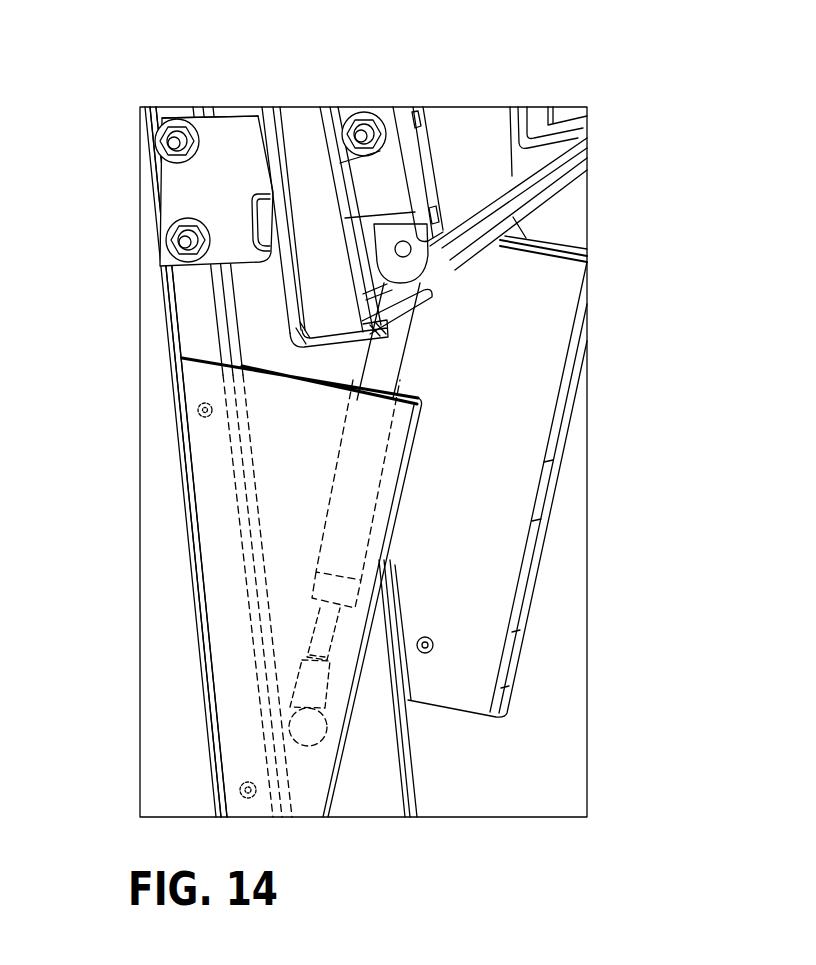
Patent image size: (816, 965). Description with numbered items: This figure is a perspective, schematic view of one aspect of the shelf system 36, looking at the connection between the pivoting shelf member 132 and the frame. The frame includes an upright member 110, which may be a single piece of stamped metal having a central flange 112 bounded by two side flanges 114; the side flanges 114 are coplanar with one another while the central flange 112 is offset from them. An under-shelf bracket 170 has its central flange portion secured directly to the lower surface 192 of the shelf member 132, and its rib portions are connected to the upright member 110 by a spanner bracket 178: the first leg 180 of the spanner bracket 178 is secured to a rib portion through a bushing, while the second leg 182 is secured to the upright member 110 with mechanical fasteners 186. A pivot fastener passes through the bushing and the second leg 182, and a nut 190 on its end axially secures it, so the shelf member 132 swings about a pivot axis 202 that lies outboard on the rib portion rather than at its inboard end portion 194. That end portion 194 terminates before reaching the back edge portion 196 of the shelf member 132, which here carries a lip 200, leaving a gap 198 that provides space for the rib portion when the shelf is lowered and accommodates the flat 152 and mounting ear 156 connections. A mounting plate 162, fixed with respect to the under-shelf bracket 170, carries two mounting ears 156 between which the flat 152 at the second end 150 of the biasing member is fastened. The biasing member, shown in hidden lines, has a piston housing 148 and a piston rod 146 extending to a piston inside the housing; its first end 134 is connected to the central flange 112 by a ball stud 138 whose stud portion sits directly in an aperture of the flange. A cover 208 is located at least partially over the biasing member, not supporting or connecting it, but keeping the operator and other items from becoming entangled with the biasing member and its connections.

The system 36 is at (608, 141).
The upright member 110 is at (175, 337).
The central flange 112 is at (195, 307).
The side flanges 114 is at (160, 287).
The shelf member 132 is at (467, 117).
The first end 134 is at (298, 638).
The ball stud 138 is at (303, 725).
The piston rod 146 is at (312, 609).
The piston housing 148 is at (322, 550).
The second end 150 is at (417, 369).
The flat 152 is at (424, 288).
The mounting ears 156 is at (427, 253).
The mounting plate 162 is at (422, 131).
The under-shelf bracket 170 is at (395, 203).
The spanner bracket 178 is at (177, 178).
The first leg 180 is at (338, 113).
The second leg 182 is at (178, 205).
The mechanical fasteners 186 is at (186, 242).
The nut 190 is at (372, 110).
The lower surface 192 is at (497, 118).
The inboard end portion 194 is at (428, 182).
The back edge portion 196 is at (289, 323).
The gap 198 is at (318, 224).
The lip 200 is at (330, 358).
The pivot axis 202 is at (227, 243).
The cover 208 is at (467, 527).